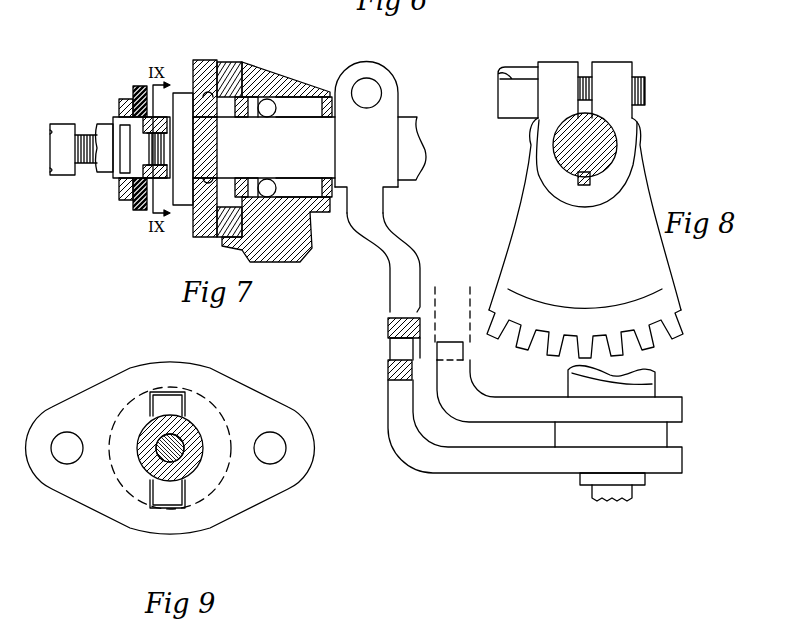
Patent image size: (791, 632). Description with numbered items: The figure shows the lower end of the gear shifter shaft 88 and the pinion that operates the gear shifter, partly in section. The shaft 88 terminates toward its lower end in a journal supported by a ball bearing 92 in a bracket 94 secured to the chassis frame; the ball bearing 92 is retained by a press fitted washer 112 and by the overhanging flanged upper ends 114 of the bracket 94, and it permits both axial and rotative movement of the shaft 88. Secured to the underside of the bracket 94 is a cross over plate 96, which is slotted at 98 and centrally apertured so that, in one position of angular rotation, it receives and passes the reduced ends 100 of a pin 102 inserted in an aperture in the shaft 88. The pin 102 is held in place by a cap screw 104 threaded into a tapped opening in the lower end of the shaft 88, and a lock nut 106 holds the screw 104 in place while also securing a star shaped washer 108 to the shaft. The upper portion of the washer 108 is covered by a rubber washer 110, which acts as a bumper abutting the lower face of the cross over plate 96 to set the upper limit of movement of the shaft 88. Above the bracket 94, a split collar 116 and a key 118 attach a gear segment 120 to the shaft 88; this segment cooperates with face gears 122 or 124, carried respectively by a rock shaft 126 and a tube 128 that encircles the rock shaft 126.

In FIG. 7, the shaft 88 is at (410, 125).
In FIG. 8, the shaft 88 is at (610, 140).
In FIG. 7, the ball bearing 92 is at (277, 83).
In FIG. 7, the bracket 94 is at (300, 250).
In FIG. 7, the cross over plate 96 is at (203, 63).
In FIG. 9, the cross over plate 96 is at (232, 393).
In FIG. 7, the slot 98 is at (220, 97).
In FIG. 9, the slot 98 is at (150, 402).
In FIG. 7, the reduced ends 100 is at (175, 93).
In FIG. 7, the pin 102 is at (218, 137).
In FIG. 7, the cap screw 104 is at (88, 166).
In FIG. 7, the lock nut 106 is at (110, 168).
In FIG. 7, the star shaped washer 108 is at (127, 100).
In FIG. 7, the rubber washer 110 is at (137, 90).
In FIG. 7, the press fitted washer 112 is at (238, 187).
In FIG. 7, the flanged upper ends 114 is at (337, 80).
In FIG. 7, the split collar 116 is at (388, 192).
In FIG. 8, the split collar 116 is at (613, 67).
In FIG. 8, the key 118 is at (596, 180).
In FIG. 7, the gear segment 120 is at (407, 265).
In FIG. 8, the gear segment 120 is at (648, 277).
In FIG. 7, the face gear 122 is at (473, 465).
In FIG. 7, the face gear 124 is at (485, 405).
In FIG. 7, the rock shaft 126 is at (642, 481).
In FIG. 7, the tube 128 is at (652, 387).